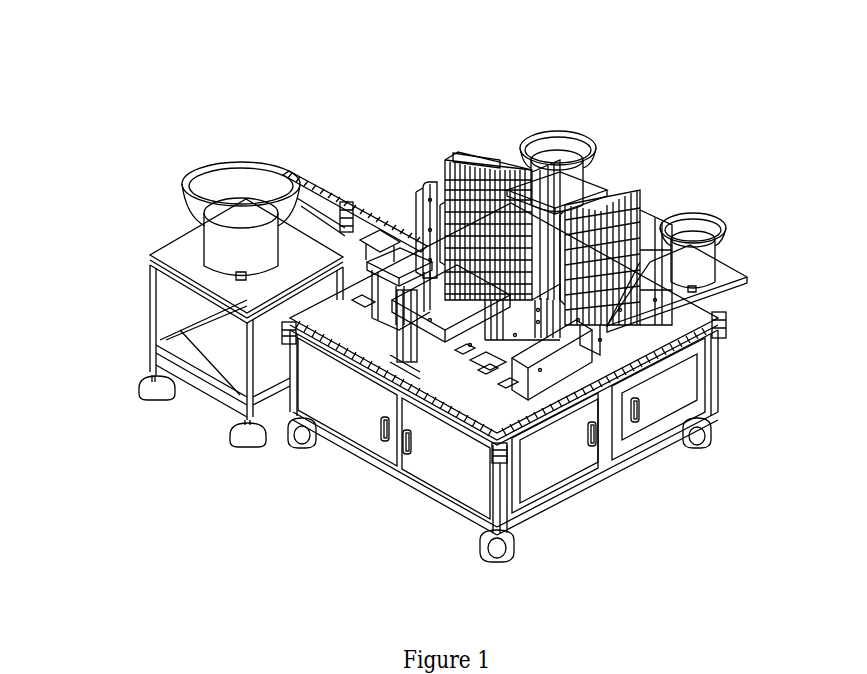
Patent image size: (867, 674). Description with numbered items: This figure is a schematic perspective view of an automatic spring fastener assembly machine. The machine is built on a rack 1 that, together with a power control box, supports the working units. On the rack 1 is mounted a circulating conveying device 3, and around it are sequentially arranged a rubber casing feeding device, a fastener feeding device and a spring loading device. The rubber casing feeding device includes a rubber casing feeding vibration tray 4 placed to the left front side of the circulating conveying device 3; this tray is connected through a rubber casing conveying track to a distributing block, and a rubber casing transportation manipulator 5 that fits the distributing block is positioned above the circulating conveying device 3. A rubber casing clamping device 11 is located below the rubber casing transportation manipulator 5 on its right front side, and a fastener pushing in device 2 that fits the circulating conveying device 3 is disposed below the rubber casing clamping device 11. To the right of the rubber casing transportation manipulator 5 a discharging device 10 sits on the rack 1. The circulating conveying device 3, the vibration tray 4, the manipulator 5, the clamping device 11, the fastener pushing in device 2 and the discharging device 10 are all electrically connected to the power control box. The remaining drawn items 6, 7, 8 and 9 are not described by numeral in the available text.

The rack 1 is at (455, 375).
The fastener pushing in device 2 is at (445, 355).
The circulating conveying device 3 is at (397, 366).
The rubber casing feeding vibration tray 4 is at (250, 247).
The rubber casing transportation manipulator 5 is at (442, 183).
The central assembly mechanism 6 is at (497, 160).
The second vibrating bowl feeder 7 is at (560, 182).
The right assembly mechanism 8 is at (598, 222).
The third vibrating bowl feeder 9 is at (695, 260).
The discharging device 10 is at (611, 453).
The rubber casing clamping device 11 is at (500, 368).